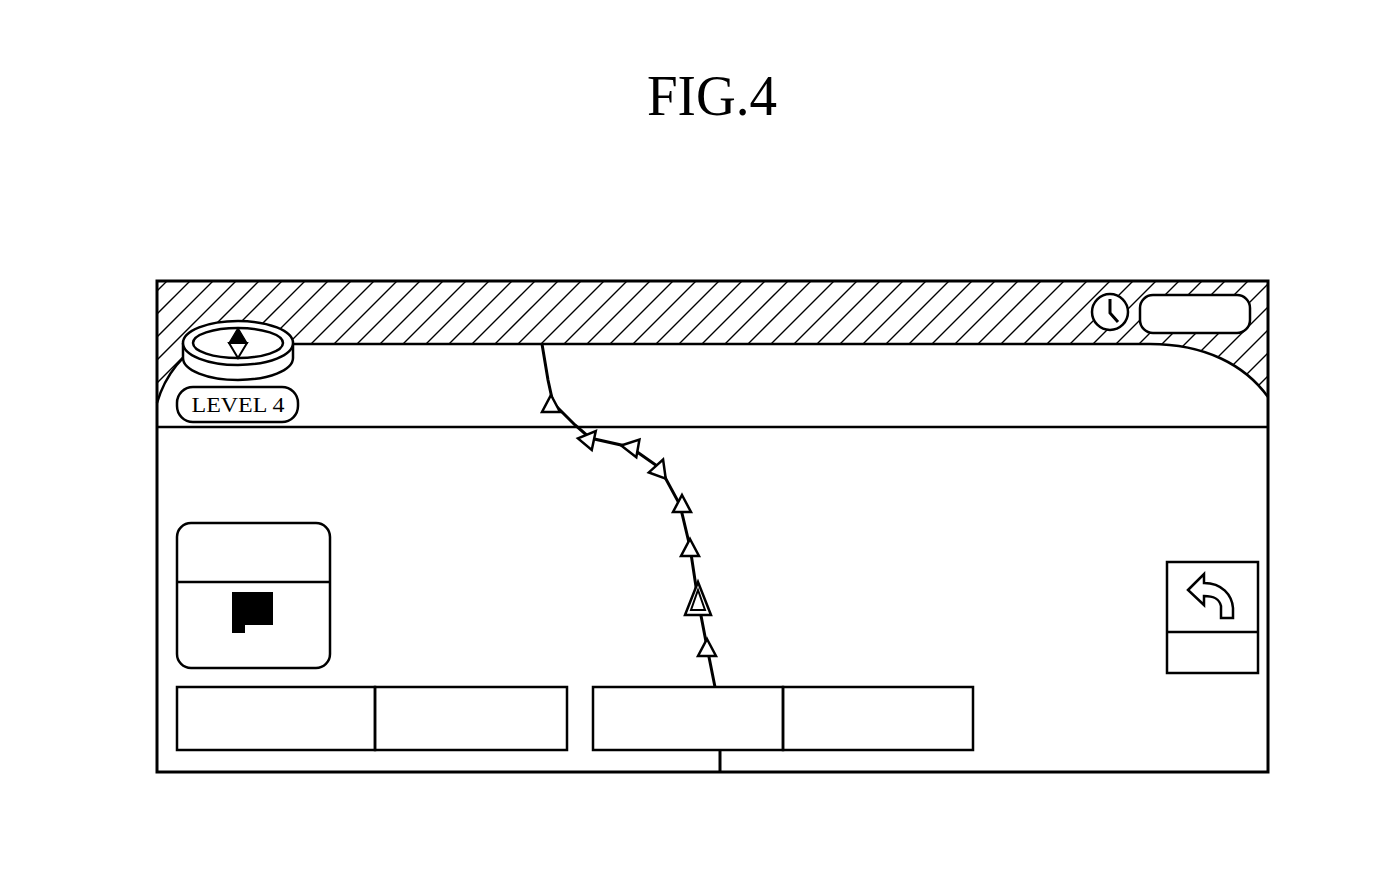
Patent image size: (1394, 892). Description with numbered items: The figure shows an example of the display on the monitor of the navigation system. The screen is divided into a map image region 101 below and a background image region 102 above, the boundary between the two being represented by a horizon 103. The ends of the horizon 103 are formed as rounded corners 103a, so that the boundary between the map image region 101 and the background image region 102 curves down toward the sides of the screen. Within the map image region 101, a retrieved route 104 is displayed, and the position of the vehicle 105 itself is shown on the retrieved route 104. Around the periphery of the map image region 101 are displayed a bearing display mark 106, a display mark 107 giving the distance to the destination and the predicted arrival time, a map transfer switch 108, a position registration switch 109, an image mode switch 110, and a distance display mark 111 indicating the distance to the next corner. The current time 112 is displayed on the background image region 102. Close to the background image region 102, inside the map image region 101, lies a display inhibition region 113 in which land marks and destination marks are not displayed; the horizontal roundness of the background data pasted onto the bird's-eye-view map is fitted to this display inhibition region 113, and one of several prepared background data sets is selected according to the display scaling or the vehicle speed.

The map image region 101 is at (1268, 527).
The background image region 102 is at (935, 290).
The horizon 103 is at (1012, 350).
The rounded corners 103a is at (155, 393).
The retrieved route 104 is at (550, 370).
The position of the vehicle 105 is at (712, 598).
The bearing display mark 106 is at (212, 322).
The display mark of the distance to a destination and predicted arrival time 107 is at (177, 605).
The map transfer switch 108 is at (275, 750).
The position registration switch 109 is at (470, 750).
The image mode switch 110 is at (660, 750).
The distance display mark 111 is at (1258, 598).
The current time 112 is at (1218, 290).
The display inhibition region 113 is at (1237, 408).